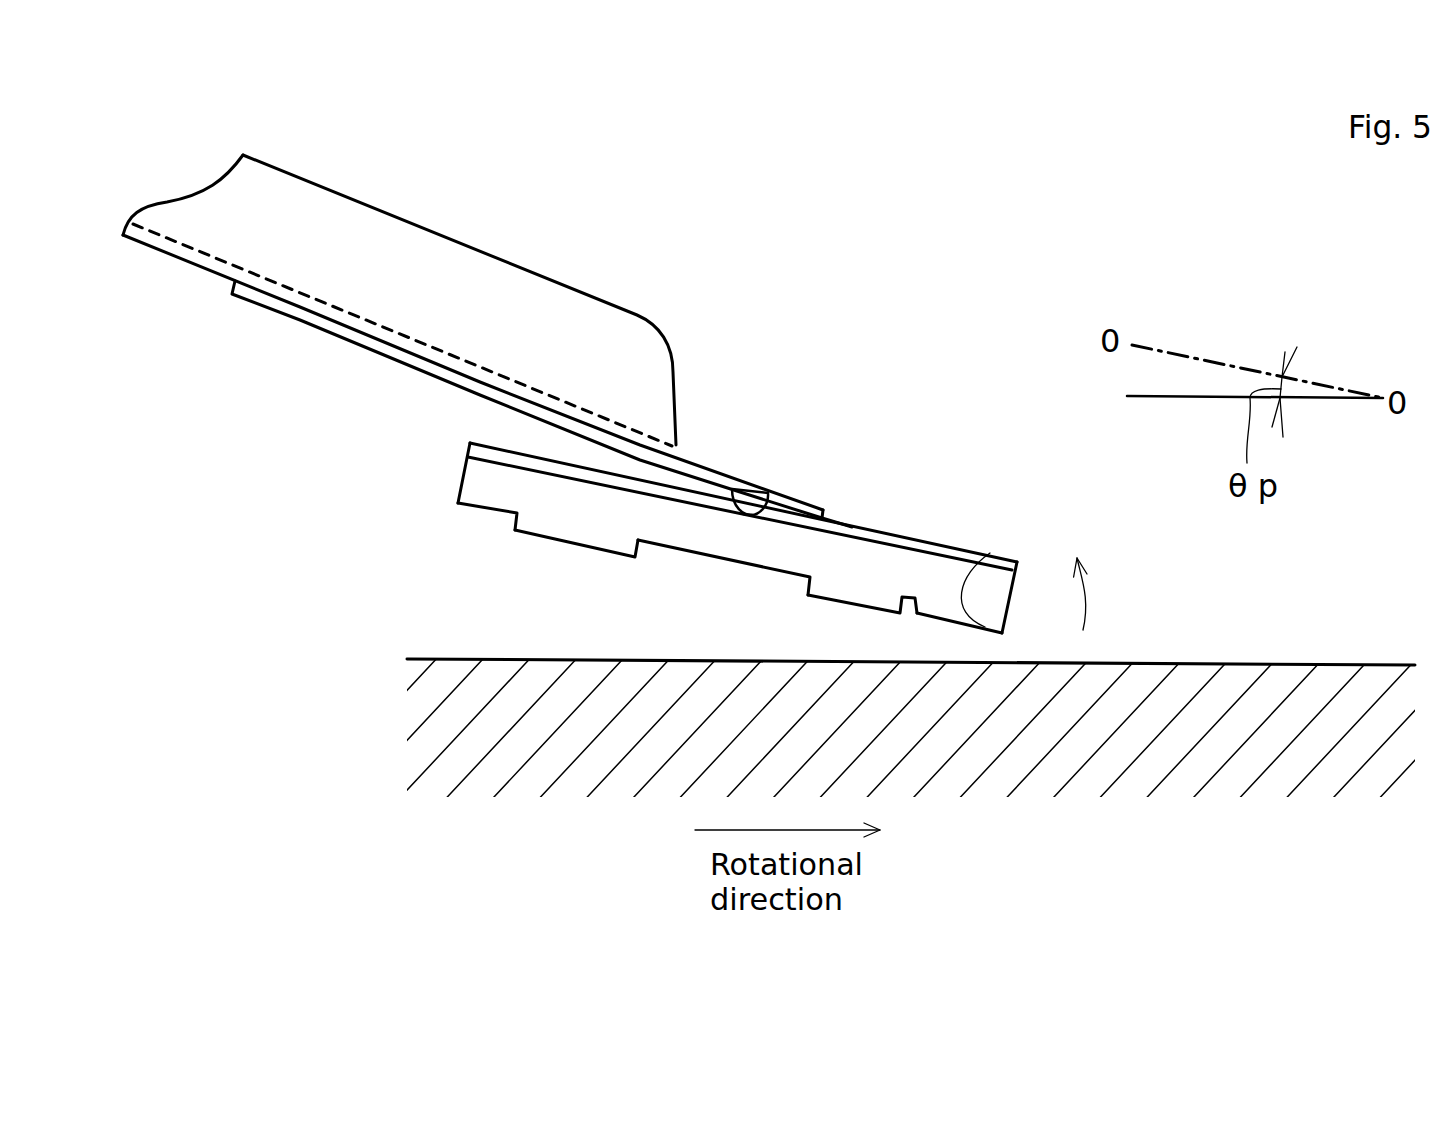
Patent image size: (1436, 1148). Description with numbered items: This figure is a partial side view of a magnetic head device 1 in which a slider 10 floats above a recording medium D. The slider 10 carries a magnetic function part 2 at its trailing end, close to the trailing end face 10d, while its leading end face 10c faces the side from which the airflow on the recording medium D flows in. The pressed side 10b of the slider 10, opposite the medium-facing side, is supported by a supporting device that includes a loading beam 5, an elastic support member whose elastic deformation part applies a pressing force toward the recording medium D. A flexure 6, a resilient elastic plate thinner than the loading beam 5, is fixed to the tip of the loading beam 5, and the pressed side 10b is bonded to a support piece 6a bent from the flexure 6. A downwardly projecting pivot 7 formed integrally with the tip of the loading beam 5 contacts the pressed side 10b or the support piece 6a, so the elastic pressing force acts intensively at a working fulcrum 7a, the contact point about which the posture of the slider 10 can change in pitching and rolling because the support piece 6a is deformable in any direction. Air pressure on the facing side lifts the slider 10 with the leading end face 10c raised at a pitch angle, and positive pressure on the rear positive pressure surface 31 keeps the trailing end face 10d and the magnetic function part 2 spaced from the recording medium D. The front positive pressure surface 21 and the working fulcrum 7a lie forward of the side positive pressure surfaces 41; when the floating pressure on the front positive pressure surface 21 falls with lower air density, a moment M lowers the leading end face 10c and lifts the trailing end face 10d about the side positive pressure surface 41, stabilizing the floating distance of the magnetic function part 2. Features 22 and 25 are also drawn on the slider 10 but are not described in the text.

The magnetic head device 1 is at (903, 342).
The magnetic function part 2 is at (990, 553).
The loading beam 5 is at (498, 295).
The flexure 6 is at (946, 545).
The support piece 6a is at (585, 470).
The pivot 7 is at (750, 503).
The working fulcrum 7a is at (748, 516).
The slider 10 is at (698, 558).
The pressed side 10b is at (672, 500).
The leading end face 10c is at (460, 483).
The trailing end face 10d is at (1018, 600).
The front positive pressure surface 21 is at (558, 542).
The leading step 22 is at (493, 513).
The center rail 25 is at (758, 570).
The rear positive pressure surface 31 is at (943, 620).
The side positive pressure surface 41 is at (857, 607).
The recording medium D is at (1130, 750).
The moment M is at (1100, 594).